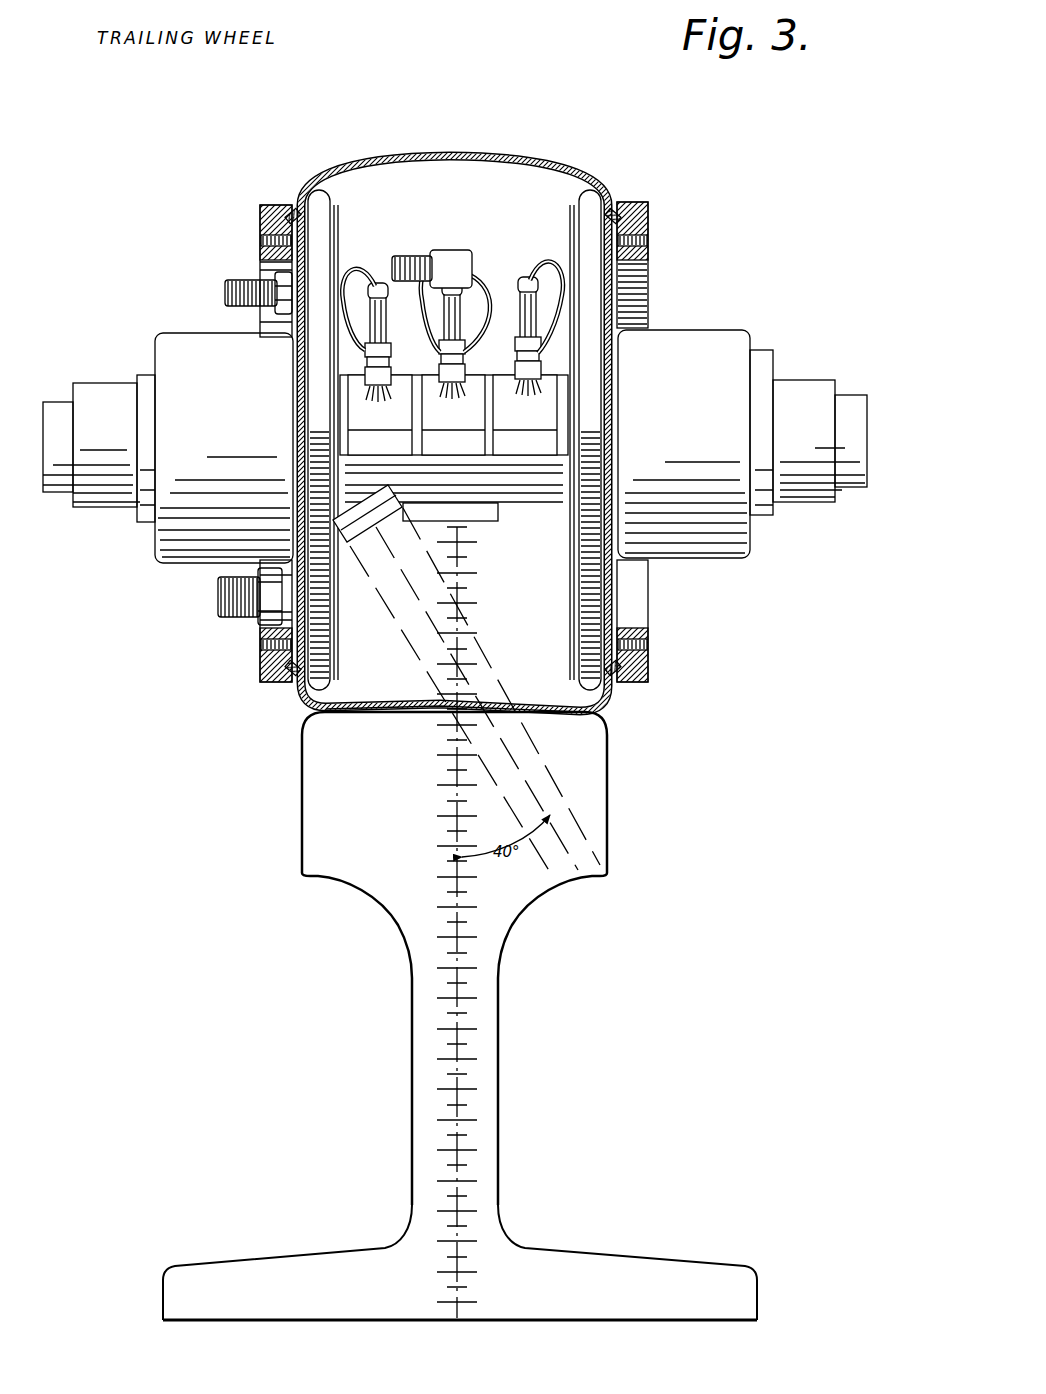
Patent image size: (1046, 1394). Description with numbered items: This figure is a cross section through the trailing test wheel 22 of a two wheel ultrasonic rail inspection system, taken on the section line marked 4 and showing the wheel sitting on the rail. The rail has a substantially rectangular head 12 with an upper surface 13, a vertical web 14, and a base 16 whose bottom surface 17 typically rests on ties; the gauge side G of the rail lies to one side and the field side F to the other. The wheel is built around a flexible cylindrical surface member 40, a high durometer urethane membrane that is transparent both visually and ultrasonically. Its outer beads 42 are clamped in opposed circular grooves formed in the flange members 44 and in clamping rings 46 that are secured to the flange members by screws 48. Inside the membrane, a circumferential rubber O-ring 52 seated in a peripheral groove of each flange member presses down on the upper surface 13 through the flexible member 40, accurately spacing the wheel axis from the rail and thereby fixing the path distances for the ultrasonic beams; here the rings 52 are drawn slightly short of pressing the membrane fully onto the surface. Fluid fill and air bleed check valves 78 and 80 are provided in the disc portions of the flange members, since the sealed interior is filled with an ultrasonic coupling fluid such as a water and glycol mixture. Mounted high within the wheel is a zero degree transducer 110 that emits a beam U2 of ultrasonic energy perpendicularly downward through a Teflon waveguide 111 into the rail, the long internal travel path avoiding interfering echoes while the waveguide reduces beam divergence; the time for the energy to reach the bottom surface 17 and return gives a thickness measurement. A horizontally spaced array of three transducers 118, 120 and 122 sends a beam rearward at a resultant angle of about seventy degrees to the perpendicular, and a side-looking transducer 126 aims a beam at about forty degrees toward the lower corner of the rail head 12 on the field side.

The section line 4- 4 is at (316, 106).
The rail head 12 is at (315, 842).
The upper surface 13 is at (617, 712).
The vertical web 14 is at (503, 1022).
The base 16 is at (660, 1250).
The bottom surface 17 is at (425, 1322).
The trailing test wheel 22 is at (160, 243).
The flexible cylindrical surface member 40 is at (483, 156).
The outer beads 42 is at (290, 216).
The flange members 44 is at (342, 240).
The clamping rings 46 is at (262, 220).
The screws 48 is at (262, 241).
The O-ring 52 is at (337, 640).
The fluid fill and air bleed check valve 78 is at (217, 592).
The fluid fill and air bleed check valve 80 is at (225, 290).
The zero degree transducer 110 is at (470, 347).
The Teflon waveguide 111 is at (487, 511).
The transducer 118 is at (394, 424).
The transducer 120 is at (467, 424).
The transducer 122 is at (539, 424).
The side-looking transducer 126 is at (378, 500).
The gauge side G is at (302, 775).
The field side F is at (610, 785).
The ultrasonic beam U2 is at (460, 1106).